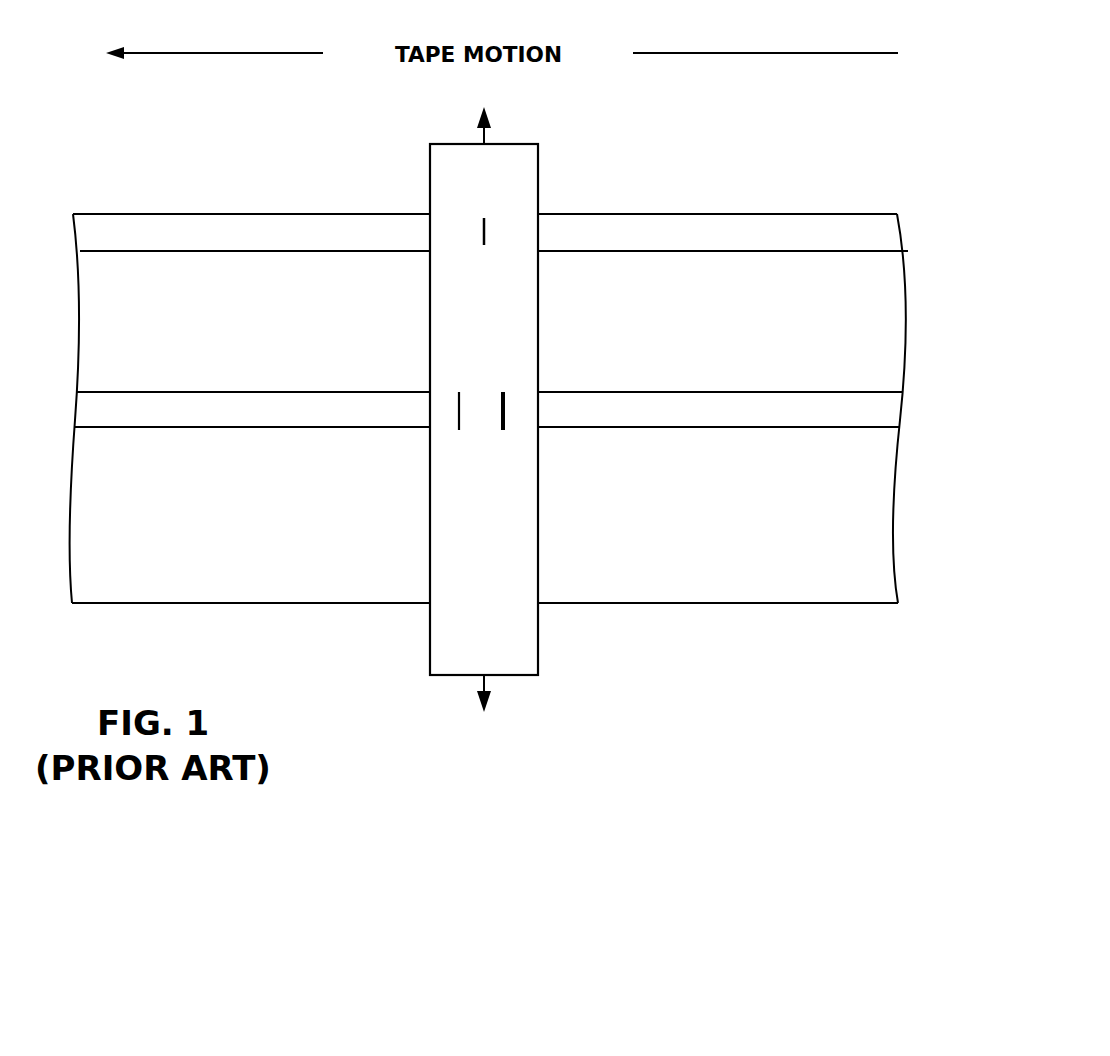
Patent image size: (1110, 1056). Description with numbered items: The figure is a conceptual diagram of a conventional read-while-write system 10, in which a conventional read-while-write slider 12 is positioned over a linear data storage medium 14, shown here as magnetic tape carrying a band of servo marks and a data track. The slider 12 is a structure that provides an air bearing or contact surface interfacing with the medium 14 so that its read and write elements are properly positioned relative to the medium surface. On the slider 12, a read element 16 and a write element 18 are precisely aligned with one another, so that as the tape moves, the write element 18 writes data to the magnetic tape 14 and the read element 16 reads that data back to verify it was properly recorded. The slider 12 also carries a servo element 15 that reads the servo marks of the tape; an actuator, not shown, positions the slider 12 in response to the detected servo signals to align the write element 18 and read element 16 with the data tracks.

The conventional read-while-write system 10 is at (663, 658).
The read-while-write slider 12 is at (450, 623).
The linear data storage medium 14 is at (150, 570).
The servo element 15 is at (485, 223).
The read element 16 is at (459, 420).
The write element 18 is at (504, 428).